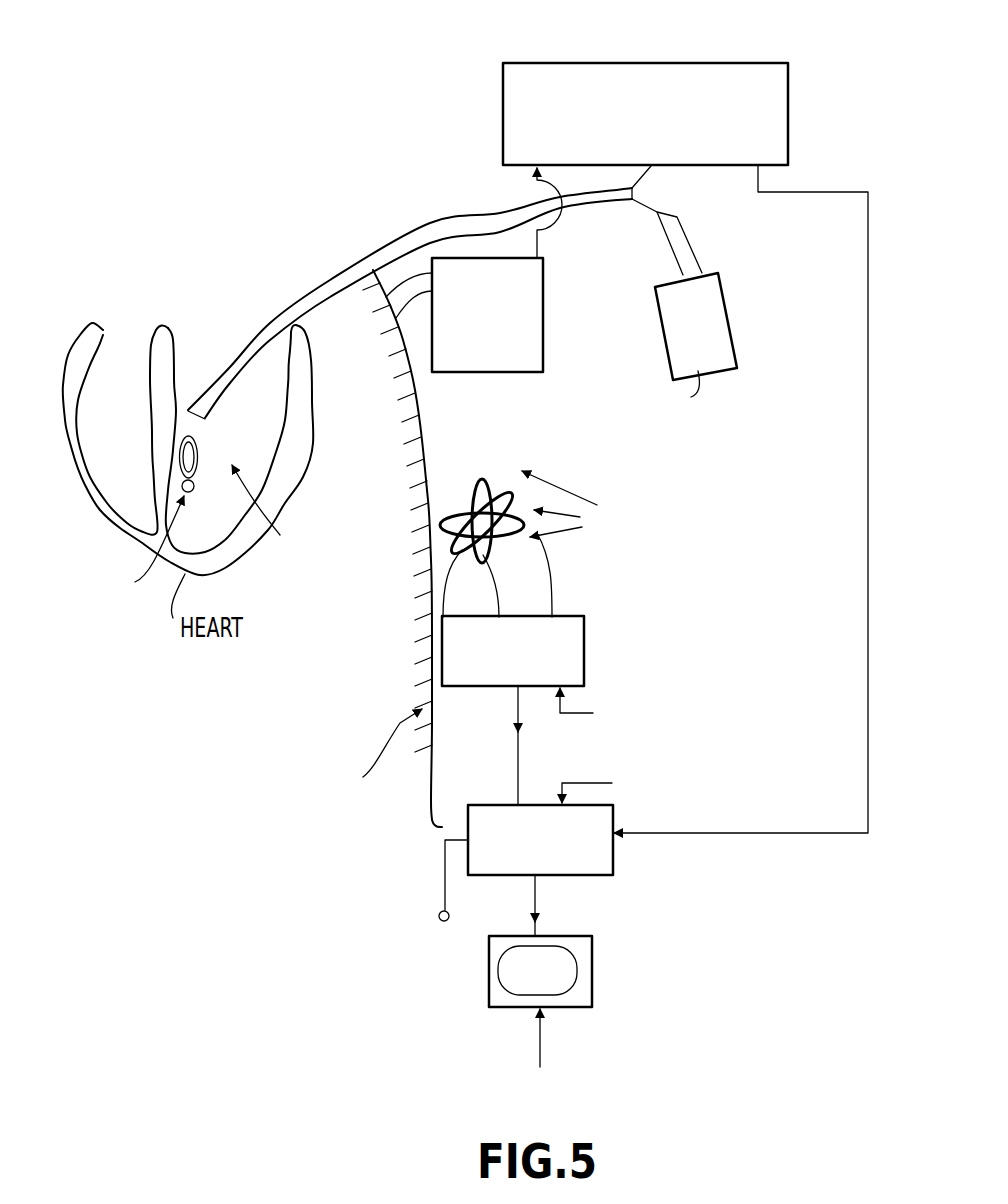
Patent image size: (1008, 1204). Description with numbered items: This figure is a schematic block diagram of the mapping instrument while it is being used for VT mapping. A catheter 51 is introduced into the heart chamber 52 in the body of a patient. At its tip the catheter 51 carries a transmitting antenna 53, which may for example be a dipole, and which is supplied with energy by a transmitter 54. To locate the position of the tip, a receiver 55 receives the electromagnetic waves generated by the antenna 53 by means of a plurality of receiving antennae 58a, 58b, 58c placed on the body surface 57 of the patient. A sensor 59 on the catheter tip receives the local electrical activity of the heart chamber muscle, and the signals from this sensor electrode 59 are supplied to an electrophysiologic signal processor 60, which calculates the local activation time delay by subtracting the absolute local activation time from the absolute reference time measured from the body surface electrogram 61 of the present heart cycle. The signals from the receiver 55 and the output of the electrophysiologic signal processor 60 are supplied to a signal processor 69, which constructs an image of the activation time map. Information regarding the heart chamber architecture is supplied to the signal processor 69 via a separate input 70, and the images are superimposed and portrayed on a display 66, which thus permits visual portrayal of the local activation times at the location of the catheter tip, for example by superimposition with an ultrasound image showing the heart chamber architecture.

The catheter 51 is at (300, 278).
The heart chamber 52 is at (284, 446).
The transmitting antenna 53 is at (188, 412).
The transmitter 54 is at (735, 320).
The receiver 55 is at (587, 646).
The body surface 57 is at (431, 742).
The receiving antenna 58a is at (528, 473).
The receiving antenna 58b is at (563, 514).
The receiving antenna 58c is at (555, 537).
The sensor 59 is at (195, 490).
The electrophysiologic signal processor 60 is at (503, 64).
The body surface electrogram 61 is at (543, 330).
The display 66 is at (593, 968).
The signal processor 69 is at (614, 823).
The separate input 70 is at (443, 840).